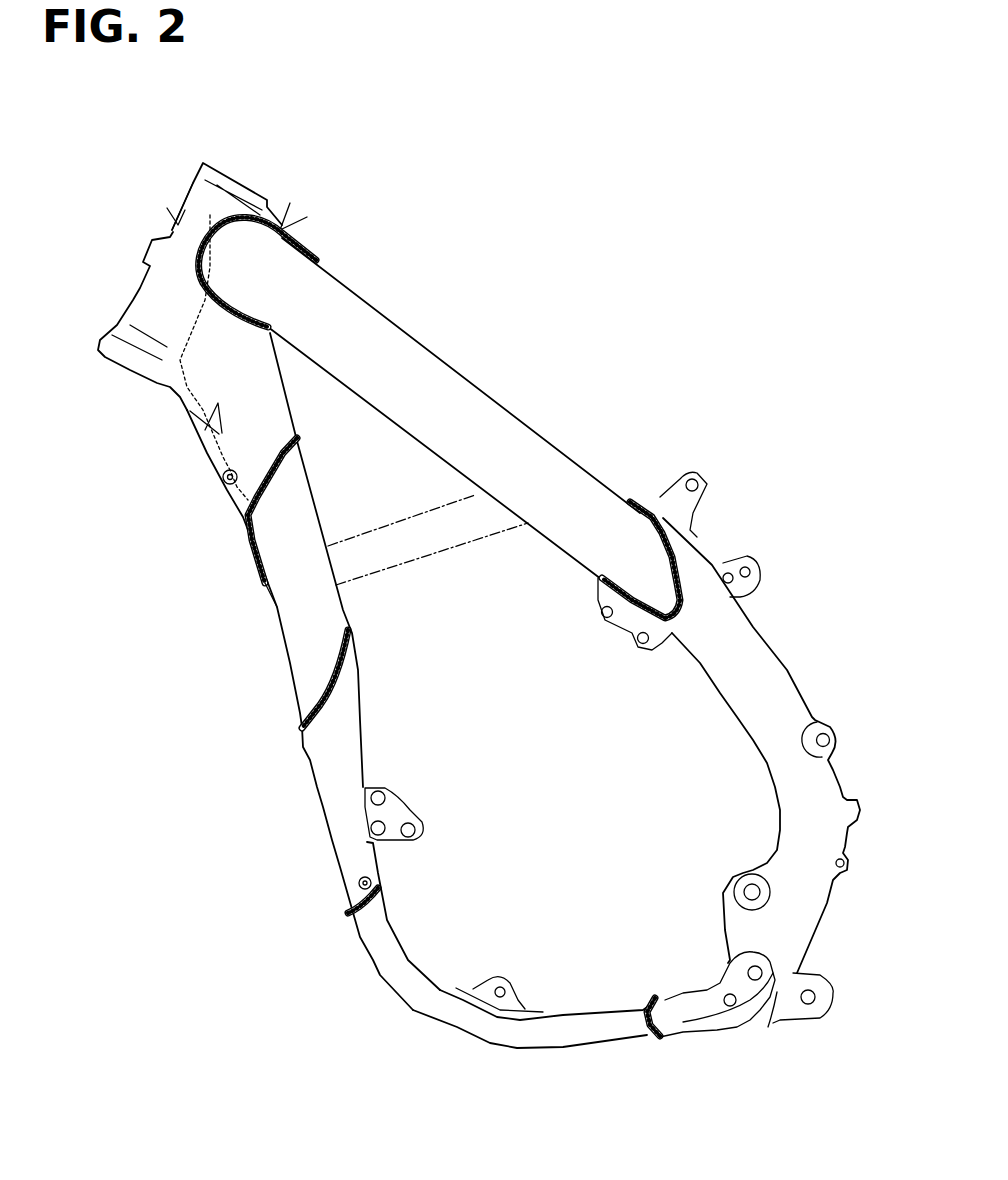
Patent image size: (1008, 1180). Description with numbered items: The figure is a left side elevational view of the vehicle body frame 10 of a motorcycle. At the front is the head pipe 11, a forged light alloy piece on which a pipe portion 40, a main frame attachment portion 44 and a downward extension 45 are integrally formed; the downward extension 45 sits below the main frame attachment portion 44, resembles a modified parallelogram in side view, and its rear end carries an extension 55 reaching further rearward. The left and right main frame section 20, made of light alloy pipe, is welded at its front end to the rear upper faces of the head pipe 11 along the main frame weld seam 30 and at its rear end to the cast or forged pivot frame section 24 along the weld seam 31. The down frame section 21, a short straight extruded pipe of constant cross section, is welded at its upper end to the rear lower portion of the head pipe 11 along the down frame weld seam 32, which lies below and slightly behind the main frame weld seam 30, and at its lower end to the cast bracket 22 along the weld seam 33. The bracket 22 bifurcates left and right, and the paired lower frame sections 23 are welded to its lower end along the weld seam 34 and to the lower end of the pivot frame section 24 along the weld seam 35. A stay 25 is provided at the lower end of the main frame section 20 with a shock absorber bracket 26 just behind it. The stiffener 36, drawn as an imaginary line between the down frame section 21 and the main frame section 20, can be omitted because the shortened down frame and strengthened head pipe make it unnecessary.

The vehicle body frame 10 is at (431, 287).
The head pipe 11 is at (176, 218).
The main frame section 20 is at (532, 420).
The down frame section 21 is at (290, 628).
The bracket 22 is at (318, 787).
The lower frame section 23 is at (470, 1030).
The pivot frame section 24 is at (822, 790).
The stay 25 is at (703, 477).
The shock absorber bracket 26 is at (762, 560).
The main frame weld seam 30 is at (213, 205).
The weld seam 31 is at (677, 557).
The down frame weld seam 32 is at (245, 530).
The weld seam 33 is at (345, 670).
The weld seam 34 is at (350, 914).
The weld seam 35 is at (650, 1040).
The stiffener 36 is at (440, 543).
The pipe portion 40 is at (150, 305).
The main frame attachment portion 44 is at (300, 212).
The downward extension 45 is at (205, 432).
The extension 55 is at (257, 561).